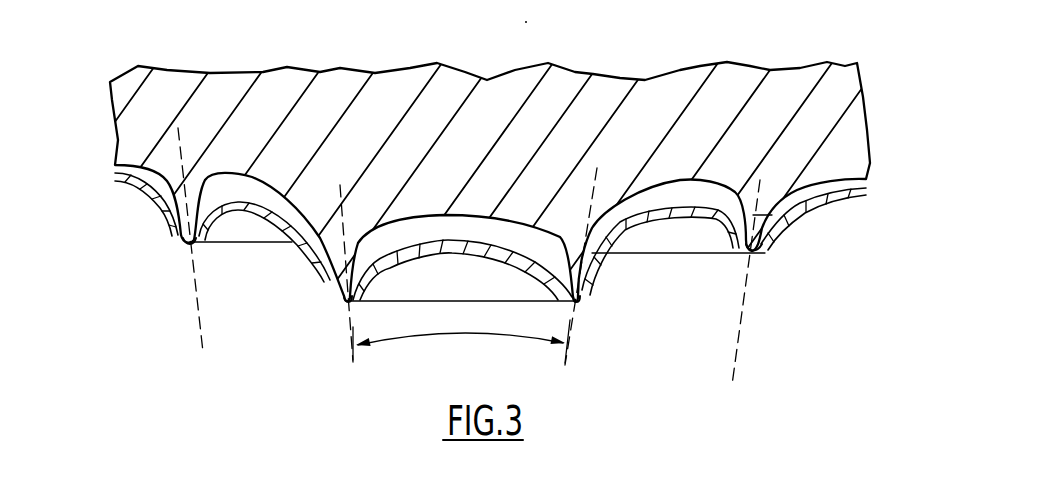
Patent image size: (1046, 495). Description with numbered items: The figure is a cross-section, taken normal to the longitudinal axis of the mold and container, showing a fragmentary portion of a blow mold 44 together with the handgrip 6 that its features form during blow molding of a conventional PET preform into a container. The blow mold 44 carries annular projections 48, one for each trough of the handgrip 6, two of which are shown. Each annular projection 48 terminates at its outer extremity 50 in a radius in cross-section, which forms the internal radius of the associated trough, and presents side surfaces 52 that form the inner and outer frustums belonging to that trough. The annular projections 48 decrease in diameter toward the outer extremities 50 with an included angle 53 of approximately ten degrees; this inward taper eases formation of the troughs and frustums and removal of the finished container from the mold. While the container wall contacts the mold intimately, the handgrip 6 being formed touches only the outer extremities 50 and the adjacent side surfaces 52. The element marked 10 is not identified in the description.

The blow mold 44 is at (802, 96).
The handgrip 6 is at (288, 257).
The tooth 10 is at (460, 250).
The annular projections 48 is at (173, 228).
The outer extremity 50 is at (577, 303).
The side surfaces 52 is at (556, 274).
The included angle 53 is at (428, 333).